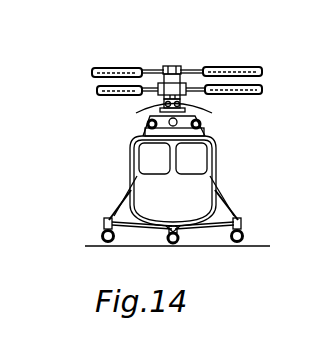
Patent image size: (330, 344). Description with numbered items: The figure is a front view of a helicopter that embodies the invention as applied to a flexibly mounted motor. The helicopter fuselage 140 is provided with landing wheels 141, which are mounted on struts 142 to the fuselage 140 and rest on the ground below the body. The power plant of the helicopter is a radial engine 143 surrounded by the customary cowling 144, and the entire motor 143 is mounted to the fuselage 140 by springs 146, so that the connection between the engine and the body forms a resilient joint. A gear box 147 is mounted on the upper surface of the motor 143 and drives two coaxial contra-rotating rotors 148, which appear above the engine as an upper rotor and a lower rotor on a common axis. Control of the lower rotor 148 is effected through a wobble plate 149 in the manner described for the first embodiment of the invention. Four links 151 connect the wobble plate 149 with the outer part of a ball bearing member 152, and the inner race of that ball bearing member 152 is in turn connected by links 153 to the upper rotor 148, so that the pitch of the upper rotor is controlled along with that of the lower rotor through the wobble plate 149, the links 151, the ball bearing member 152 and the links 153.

The helicopter fuselage 140 is at (230, 174).
The landing wheels 141 is at (247, 245).
The struts 142 is at (131, 195).
The radial engine 143 is at (210, 128).
The cowling 144 is at (136, 128).
The springs 146 is at (207, 134).
The gear box 147 is at (210, 106).
The coaxial contra-rotating rotors 148 is at (263, 91).
The wobble plate 149 is at (143, 116).
The links 151 is at (143, 90).
The ball bearing member 152 is at (163, 82).
The links 153 is at (168, 67).